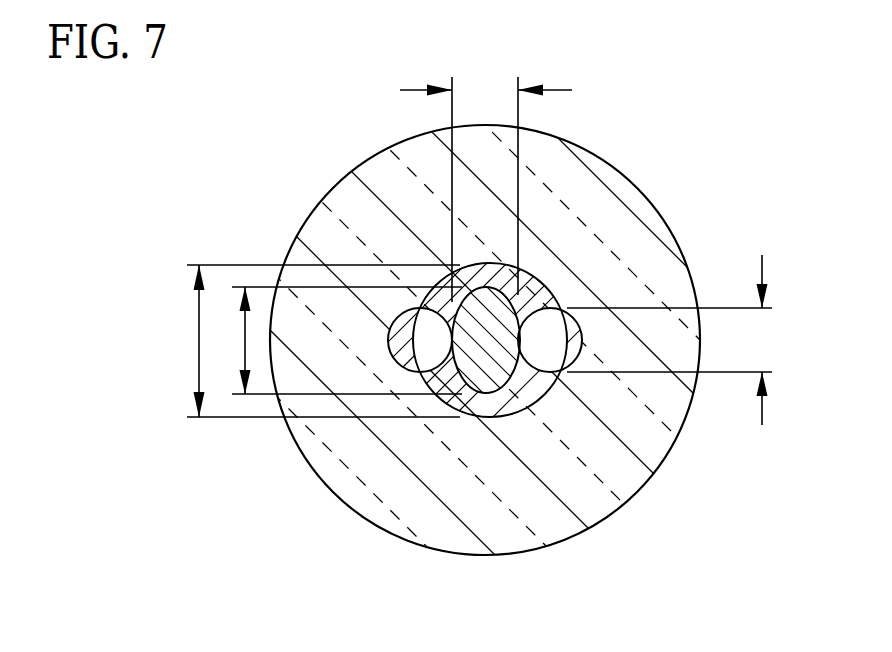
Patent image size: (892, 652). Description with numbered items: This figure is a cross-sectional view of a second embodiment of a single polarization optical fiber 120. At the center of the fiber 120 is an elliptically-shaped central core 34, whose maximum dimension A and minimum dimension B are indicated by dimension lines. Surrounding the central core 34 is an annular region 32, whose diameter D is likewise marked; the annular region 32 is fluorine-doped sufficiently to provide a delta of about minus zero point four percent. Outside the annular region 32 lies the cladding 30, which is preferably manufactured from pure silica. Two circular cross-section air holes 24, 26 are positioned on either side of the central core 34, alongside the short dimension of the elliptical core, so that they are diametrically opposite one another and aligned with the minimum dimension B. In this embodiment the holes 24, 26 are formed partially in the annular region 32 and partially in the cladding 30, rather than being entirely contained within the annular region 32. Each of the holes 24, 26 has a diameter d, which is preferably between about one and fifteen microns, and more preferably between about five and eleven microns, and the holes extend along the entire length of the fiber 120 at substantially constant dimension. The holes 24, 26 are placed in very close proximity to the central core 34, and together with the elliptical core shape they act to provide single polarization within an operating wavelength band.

The single polarization fiber 120 is at (446, 326).
The air hole 24 is at (405, 344).
The air hole 26 is at (568, 327).
The cladding 30 is at (677, 413).
The annular region 32 is at (510, 392).
The central core 34 is at (490, 395).
The maximum dimension A is at (245, 350).
The minimum dimension B is at (492, 90).
The diameter of the annular region D is at (199, 348).
The diameter of the holes d is at (763, 340).